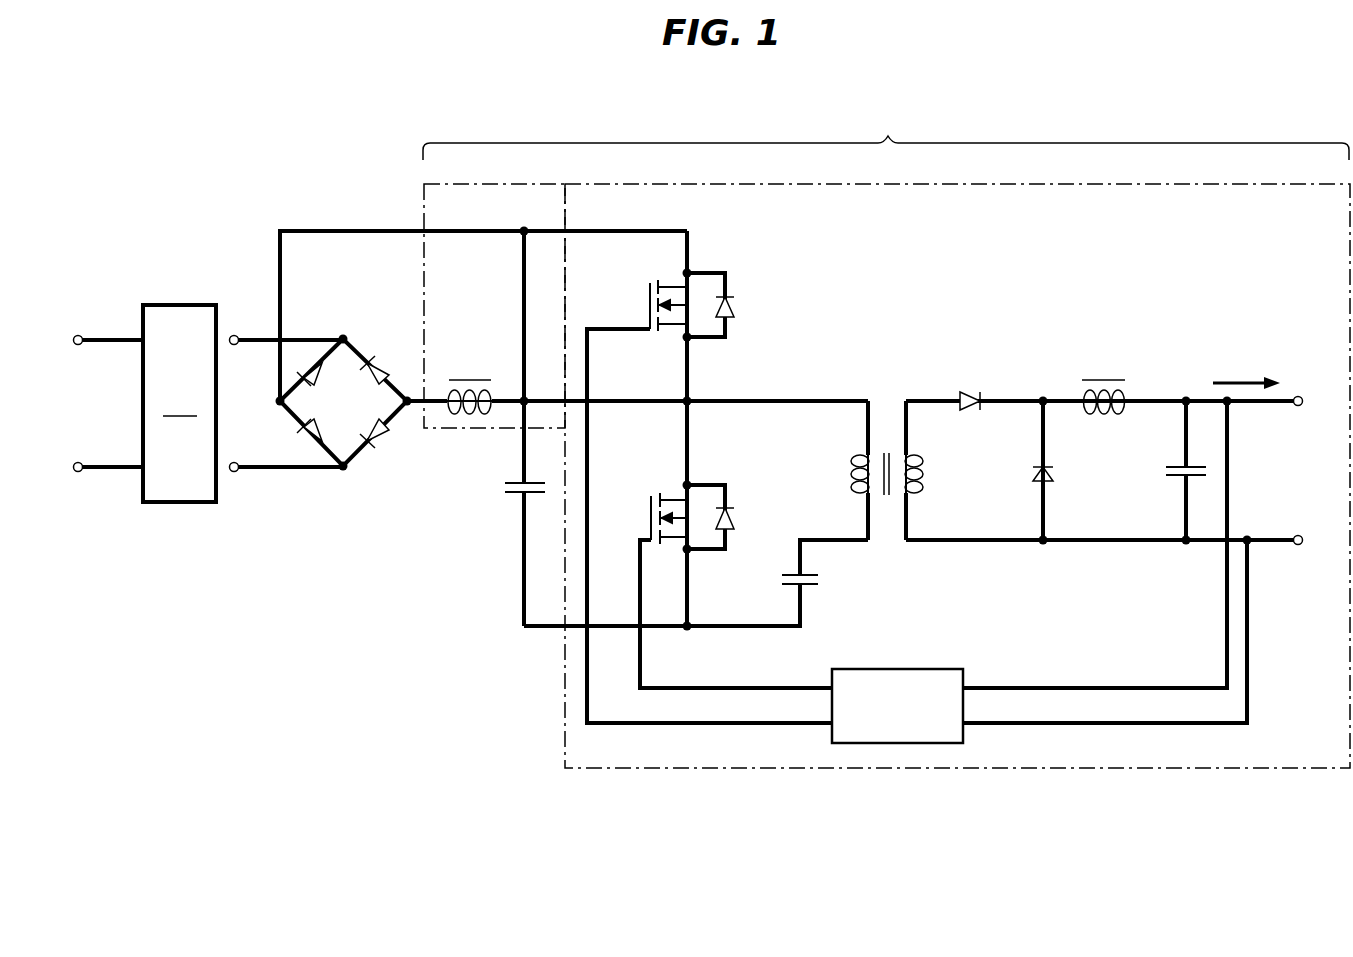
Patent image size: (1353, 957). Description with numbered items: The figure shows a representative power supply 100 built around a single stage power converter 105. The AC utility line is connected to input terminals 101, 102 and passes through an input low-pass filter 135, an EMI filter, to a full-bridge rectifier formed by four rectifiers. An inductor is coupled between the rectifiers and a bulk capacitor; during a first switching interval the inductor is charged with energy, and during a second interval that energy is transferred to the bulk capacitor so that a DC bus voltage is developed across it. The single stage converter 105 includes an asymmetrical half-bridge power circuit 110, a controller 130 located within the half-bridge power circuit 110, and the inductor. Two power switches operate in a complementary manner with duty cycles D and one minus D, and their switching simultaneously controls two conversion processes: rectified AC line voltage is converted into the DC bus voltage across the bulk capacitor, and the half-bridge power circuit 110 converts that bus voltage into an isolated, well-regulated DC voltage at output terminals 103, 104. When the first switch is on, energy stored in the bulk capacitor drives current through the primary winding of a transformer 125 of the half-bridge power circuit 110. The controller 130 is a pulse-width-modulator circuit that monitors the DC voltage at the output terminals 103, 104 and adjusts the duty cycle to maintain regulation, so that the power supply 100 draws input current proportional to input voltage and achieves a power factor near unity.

The power supply 100 is at (709, 474).
The input terminal 101 is at (78, 335).
The input terminal 102 is at (78, 472).
The output terminal 103 is at (1300, 395).
The output terminal 104 is at (1300, 546).
The single stage power converter 105 is at (886, 437).
The asymmetrical half-bridge power circuit 110 is at (1326, 219).
The transformer 125 is at (884, 413).
The controller 130 is at (918, 669).
The input low-pass filter 135 is at (179, 403).